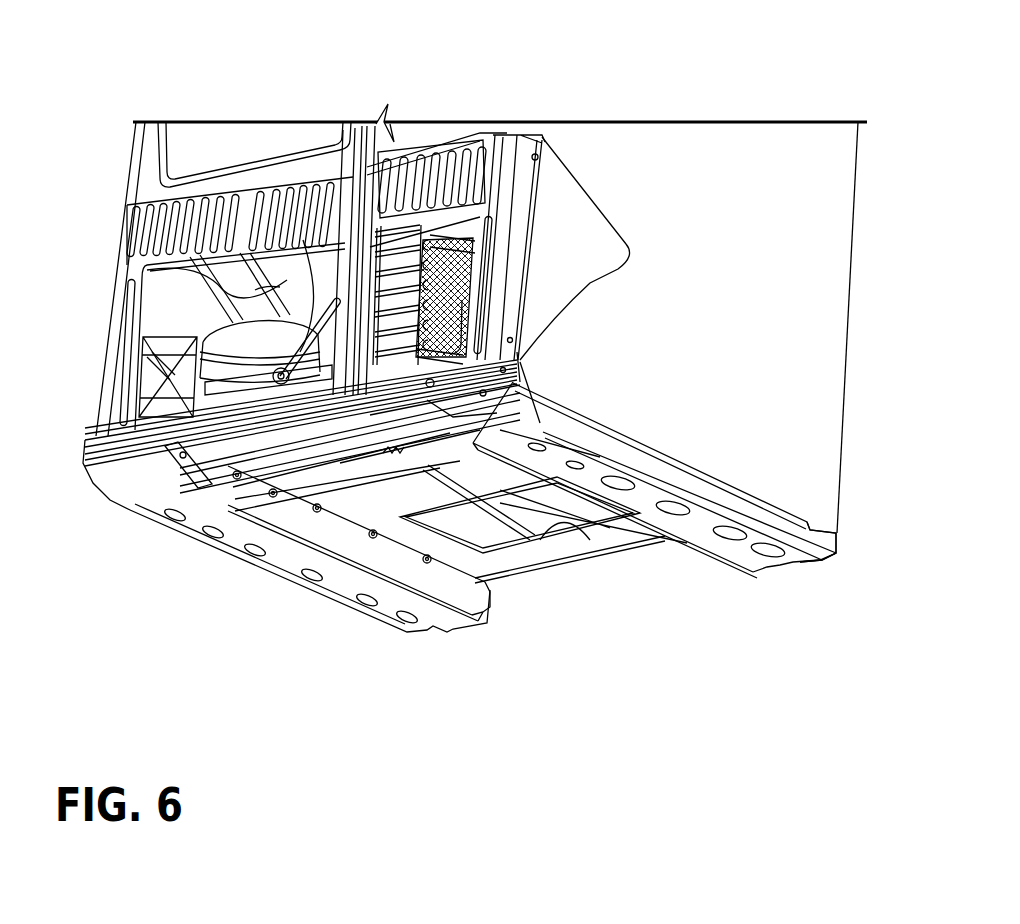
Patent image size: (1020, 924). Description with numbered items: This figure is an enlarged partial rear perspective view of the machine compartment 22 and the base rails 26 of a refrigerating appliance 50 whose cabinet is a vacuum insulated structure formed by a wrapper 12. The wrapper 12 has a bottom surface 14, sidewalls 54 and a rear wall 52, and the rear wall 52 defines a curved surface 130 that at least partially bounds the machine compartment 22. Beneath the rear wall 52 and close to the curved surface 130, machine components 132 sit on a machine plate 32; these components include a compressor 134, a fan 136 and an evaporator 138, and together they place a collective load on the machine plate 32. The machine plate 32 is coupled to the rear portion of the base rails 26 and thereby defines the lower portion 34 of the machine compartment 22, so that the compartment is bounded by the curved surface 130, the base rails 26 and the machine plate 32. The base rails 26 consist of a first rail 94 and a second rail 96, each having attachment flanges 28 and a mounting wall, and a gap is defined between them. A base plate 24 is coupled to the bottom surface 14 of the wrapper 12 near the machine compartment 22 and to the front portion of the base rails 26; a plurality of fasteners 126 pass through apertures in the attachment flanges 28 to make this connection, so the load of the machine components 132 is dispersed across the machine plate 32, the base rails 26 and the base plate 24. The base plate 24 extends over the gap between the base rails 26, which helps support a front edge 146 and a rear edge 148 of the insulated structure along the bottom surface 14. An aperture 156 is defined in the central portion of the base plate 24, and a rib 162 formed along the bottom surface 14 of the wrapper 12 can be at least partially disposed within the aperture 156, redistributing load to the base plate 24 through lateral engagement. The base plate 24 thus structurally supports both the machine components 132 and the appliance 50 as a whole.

The wrapper 12 is at (860, 160).
The bottom surface 14 is at (520, 533).
The machine compartment 22 is at (173, 302).
The base plate 24 is at (633, 537).
The base rails 26 is at (108, 496).
The attachment flanges 28 is at (628, 427).
The machine plate 32 is at (237, 450).
The lower portion 34 is at (153, 423).
The refrigerating appliance 50 is at (468, 113).
The rear wall 52 is at (196, 142).
The sidewalls 54 is at (800, 270).
The first rail 94 is at (836, 549).
The second rail 96 is at (147, 523).
The fasteners 126 is at (380, 528).
The curved surface 130 is at (157, 263).
The machine components 132 is at (314, 290).
The compressor 134 is at (153, 357).
The fan 136 is at (405, 258).
The evaporator 138 is at (478, 310).
The front edge 146 is at (673, 550).
The rear edge 148 is at (400, 492).
The aperture 156 is at (497, 530).
The rib 162 is at (587, 537).